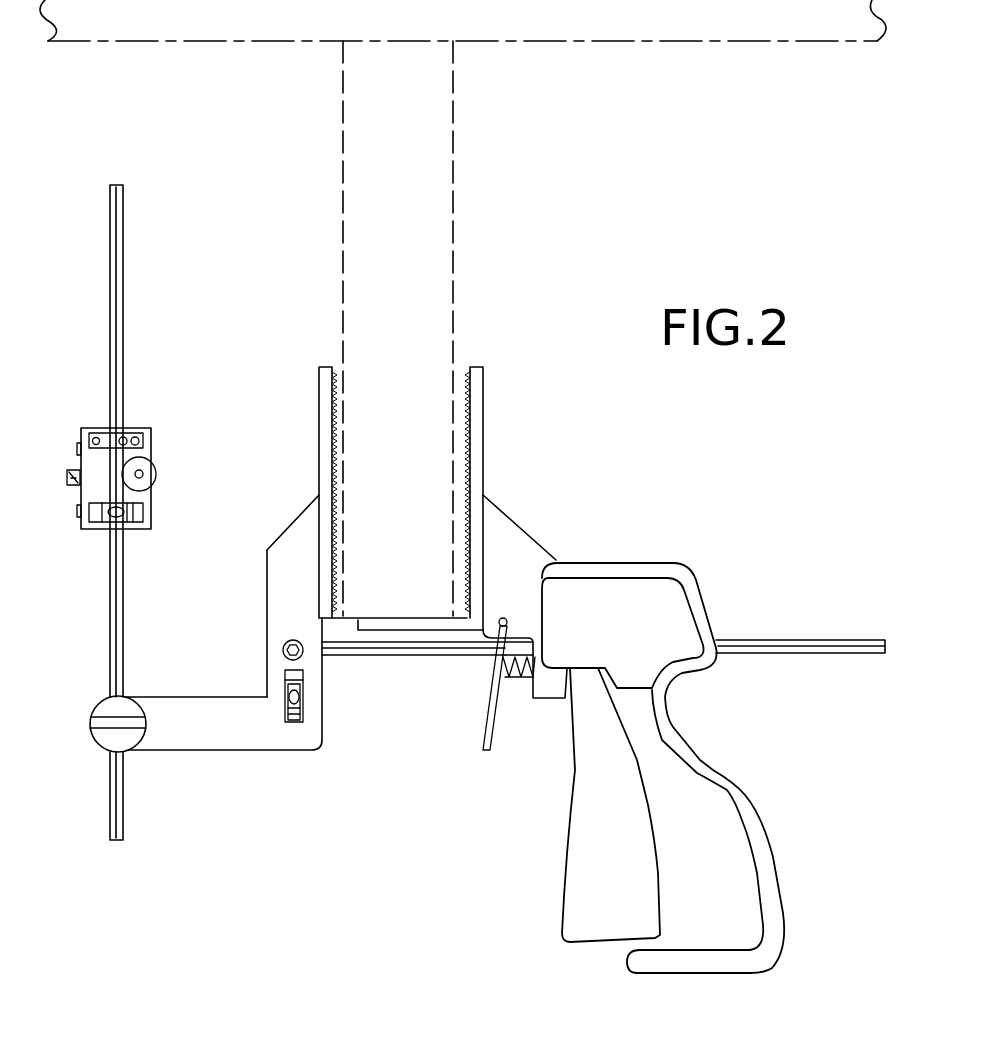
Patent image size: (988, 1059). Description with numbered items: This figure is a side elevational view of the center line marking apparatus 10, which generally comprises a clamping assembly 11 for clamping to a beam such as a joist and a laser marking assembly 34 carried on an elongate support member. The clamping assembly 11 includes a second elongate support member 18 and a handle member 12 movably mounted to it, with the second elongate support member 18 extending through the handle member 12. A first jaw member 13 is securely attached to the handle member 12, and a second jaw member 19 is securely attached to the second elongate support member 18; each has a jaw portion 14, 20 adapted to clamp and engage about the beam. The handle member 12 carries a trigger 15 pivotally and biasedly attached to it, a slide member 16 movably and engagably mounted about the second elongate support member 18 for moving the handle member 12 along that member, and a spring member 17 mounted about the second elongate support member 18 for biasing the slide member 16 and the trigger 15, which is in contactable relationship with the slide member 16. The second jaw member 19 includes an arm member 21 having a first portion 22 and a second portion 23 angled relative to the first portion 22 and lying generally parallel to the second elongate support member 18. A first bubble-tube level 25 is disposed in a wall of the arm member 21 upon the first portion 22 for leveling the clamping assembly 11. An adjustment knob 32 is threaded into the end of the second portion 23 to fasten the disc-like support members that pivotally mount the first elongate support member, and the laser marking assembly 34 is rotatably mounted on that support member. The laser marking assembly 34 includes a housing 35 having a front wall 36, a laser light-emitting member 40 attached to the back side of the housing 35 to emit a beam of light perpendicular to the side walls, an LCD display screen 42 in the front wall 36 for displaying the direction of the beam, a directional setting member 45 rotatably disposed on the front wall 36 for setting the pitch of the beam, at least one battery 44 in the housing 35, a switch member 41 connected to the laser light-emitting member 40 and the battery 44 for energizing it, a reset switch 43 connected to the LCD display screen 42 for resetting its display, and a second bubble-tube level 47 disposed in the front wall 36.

The center line marking apparatus 10 is at (480, 272).
The clamping assembly 11 is at (562, 496).
The handle member 12 is at (635, 617).
The first jaw member 13 is at (475, 497).
The jaw portion 14 is at (477, 403).
The trigger 15 is at (610, 890).
The slide member 16 is at (505, 625).
The spring member 17 is at (523, 677).
The second elongate support member 18 is at (400, 647).
The second jaw member 19 is at (268, 592).
The jaw portion 20 is at (328, 428).
The arm member 21 is at (280, 647).
The first portion 22 is at (297, 622).
The second portion 23 is at (158, 737).
The first bubble-tube level 25 is at (294, 720).
The adjustment knob 32 is at (110, 723).
The laser marking assembly 34 is at (145, 398).
The housing 35 is at (98, 467).
The front wall 36 is at (127, 498).
The laser light-emitting member 40 is at (67, 477).
The switch member 41 is at (77, 512).
The LCD display screen 42 is at (128, 435).
The reset switch 43 is at (77, 447).
The battery 44 is at (138, 518).
The directional setting member 45 is at (139, 474).
The second bubble-tube level 47 is at (106, 522).